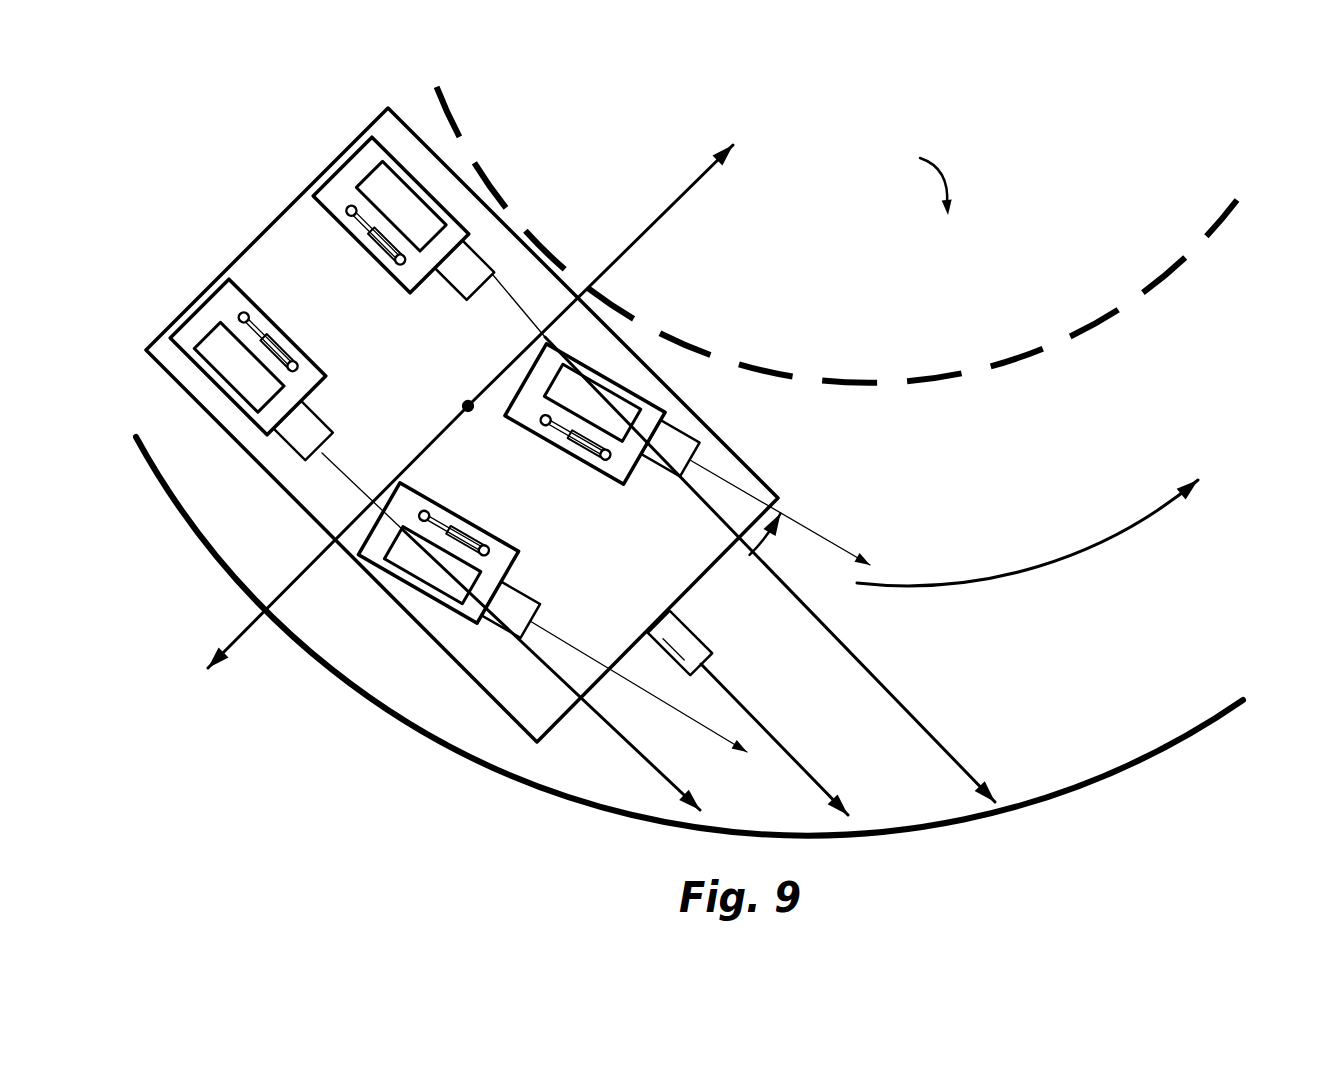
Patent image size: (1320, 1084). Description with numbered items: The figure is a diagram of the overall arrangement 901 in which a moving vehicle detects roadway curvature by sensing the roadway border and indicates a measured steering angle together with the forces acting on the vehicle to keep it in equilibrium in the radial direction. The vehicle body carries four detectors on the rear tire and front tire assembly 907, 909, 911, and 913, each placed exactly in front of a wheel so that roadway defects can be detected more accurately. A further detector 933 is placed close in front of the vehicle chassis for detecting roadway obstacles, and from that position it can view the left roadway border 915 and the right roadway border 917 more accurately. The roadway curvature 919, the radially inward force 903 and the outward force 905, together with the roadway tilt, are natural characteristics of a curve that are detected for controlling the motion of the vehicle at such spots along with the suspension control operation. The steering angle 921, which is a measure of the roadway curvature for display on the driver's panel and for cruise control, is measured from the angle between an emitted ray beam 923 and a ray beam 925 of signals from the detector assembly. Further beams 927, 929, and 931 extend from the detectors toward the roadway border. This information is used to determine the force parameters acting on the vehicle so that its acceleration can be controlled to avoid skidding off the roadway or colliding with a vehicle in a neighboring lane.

The optical scanning system 901 is at (915, 177).
The radially inward force 903 is at (703, 167).
The outward force 905 is at (221, 672).
The detector on rear tire and front tire assembly 907 is at (360, 248).
The detector on rear tire and front tire assembly 909 is at (285, 330).
The detector on rear tire and front tire assembly 911 is at (428, 493).
The detector on rear tire and front tire assembly 913 is at (662, 405).
The left roadway border 915 is at (822, 363).
The right roadway border 917 is at (1057, 790).
The roadway curvature 919 is at (1030, 568).
The steering angle 921 is at (803, 517).
The emitted ray beam 923 is at (825, 538).
The ray beam 925 is at (917, 717).
The output laser beam 927 is at (740, 703).
The deflected beam 929 is at (720, 733).
The laser beam 931 is at (647, 760).
The detector 933 is at (680, 643).